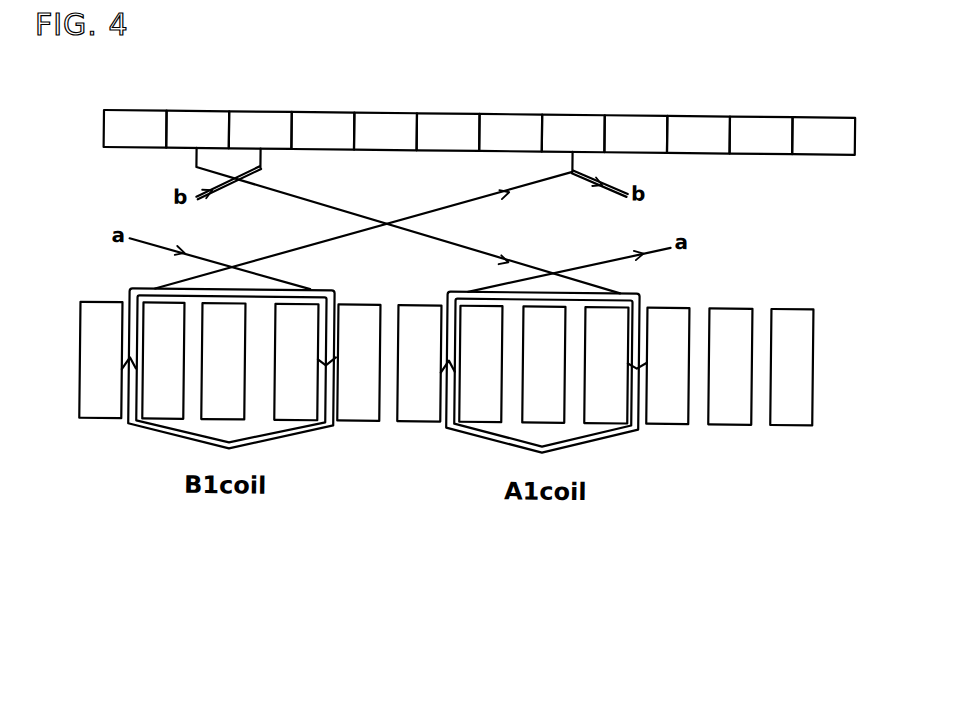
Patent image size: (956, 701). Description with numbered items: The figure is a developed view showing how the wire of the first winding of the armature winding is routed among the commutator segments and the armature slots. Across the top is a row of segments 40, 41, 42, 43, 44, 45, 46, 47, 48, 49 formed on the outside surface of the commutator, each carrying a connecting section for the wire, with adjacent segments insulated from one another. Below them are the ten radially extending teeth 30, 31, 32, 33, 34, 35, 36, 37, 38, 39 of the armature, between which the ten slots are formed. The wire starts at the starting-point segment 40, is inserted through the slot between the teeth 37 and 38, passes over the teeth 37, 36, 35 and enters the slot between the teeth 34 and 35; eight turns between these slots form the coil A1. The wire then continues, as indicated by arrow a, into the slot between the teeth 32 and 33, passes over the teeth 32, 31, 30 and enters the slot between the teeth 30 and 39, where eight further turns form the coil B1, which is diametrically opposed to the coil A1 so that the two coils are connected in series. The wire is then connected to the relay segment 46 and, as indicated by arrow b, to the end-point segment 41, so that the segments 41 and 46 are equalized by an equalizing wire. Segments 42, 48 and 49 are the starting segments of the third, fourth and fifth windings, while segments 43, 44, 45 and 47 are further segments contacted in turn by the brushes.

The tooth 30 is at (477, 363).
The tooth 31 is at (223, 361).
The tooth 32 is at (296, 362).
The tooth 33 is at (358, 362).
The tooth 34 is at (419, 363).
The tooth 35 is at (480, 364).
The tooth 36 is at (543, 364).
The tooth 37 is at (606, 365).
The tooth 38 is at (667, 366).
The tooth 39 is at (415, 363).
The segment 40 is at (510, 133).
The segment 41 is at (260, 130).
The segment 42 is at (322, 131).
The segment 43 is at (385, 132).
The segment 44 is at (448, 132).
The segment 45 is at (510, 133).
The segment 46 is at (573, 134).
The segment 47 is at (635, 134).
The segment 48 is at (698, 135).
The segment 49 is at (448, 132).